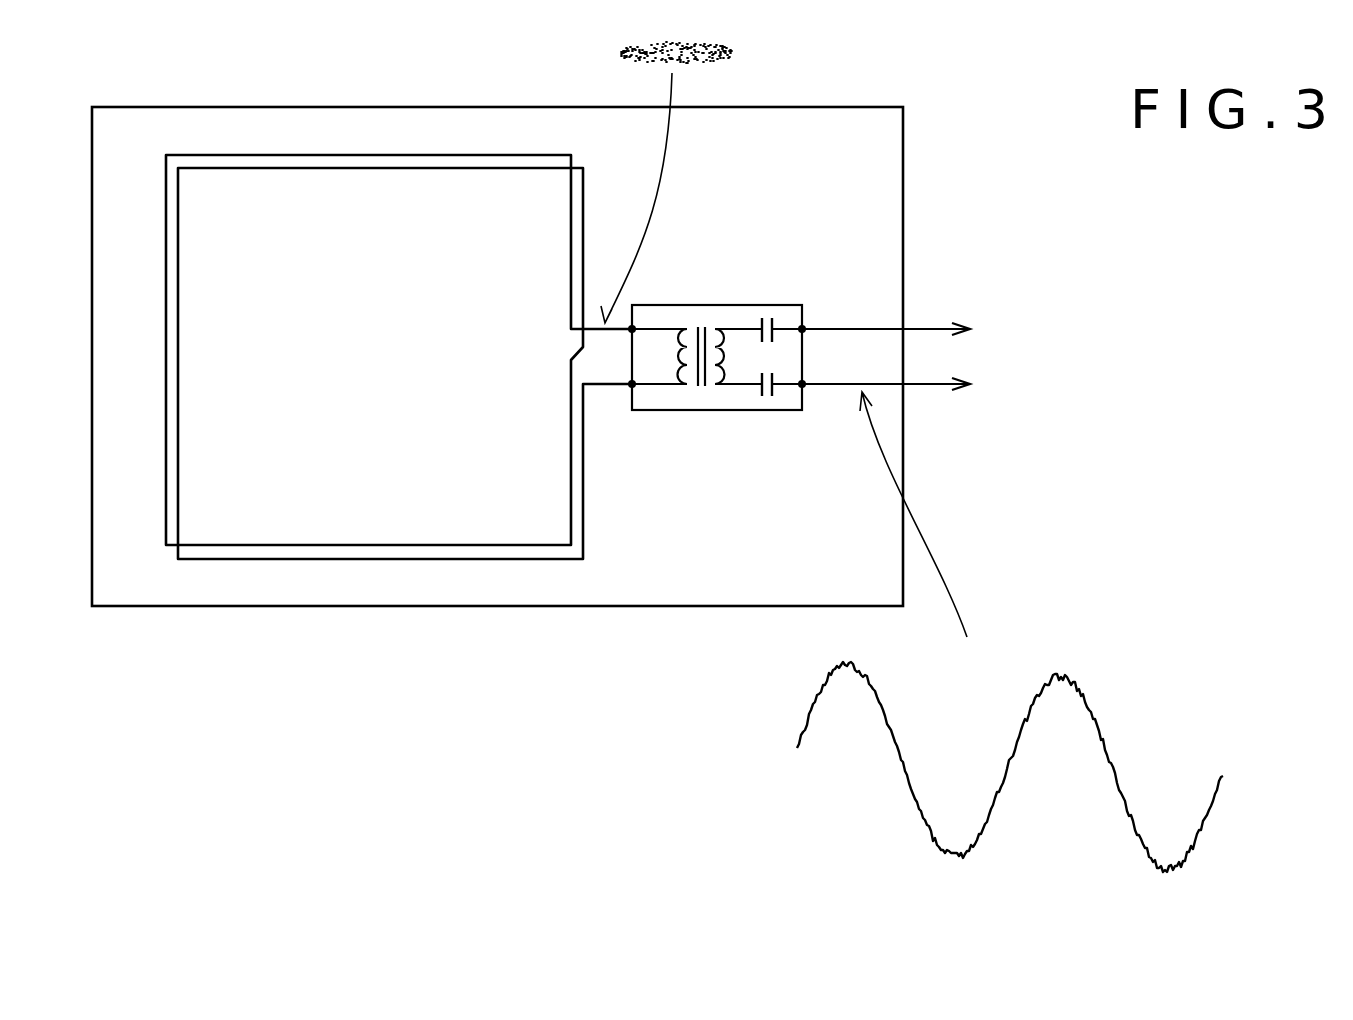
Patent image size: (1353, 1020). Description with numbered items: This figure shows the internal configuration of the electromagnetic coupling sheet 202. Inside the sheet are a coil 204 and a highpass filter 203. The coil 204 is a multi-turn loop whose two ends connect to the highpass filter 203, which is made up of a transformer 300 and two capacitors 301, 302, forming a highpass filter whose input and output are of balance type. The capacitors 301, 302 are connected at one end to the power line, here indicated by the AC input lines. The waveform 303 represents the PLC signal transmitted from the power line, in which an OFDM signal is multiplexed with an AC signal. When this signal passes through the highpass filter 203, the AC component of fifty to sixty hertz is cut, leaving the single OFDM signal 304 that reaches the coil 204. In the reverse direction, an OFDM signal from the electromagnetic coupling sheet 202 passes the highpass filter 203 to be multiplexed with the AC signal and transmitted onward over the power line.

The electromagnetic coupling sheet 202 is at (903, 165).
The coil 204 is at (490, 155).
The highpass filter 203 is at (648, 303).
The transformer 300 is at (703, 328).
The capacitor 301 is at (775, 322).
The capacitor 302 is at (762, 392).
The waveform of PLC signal 303 is at (1086, 690).
The single OFDM signal 304 is at (735, 53).